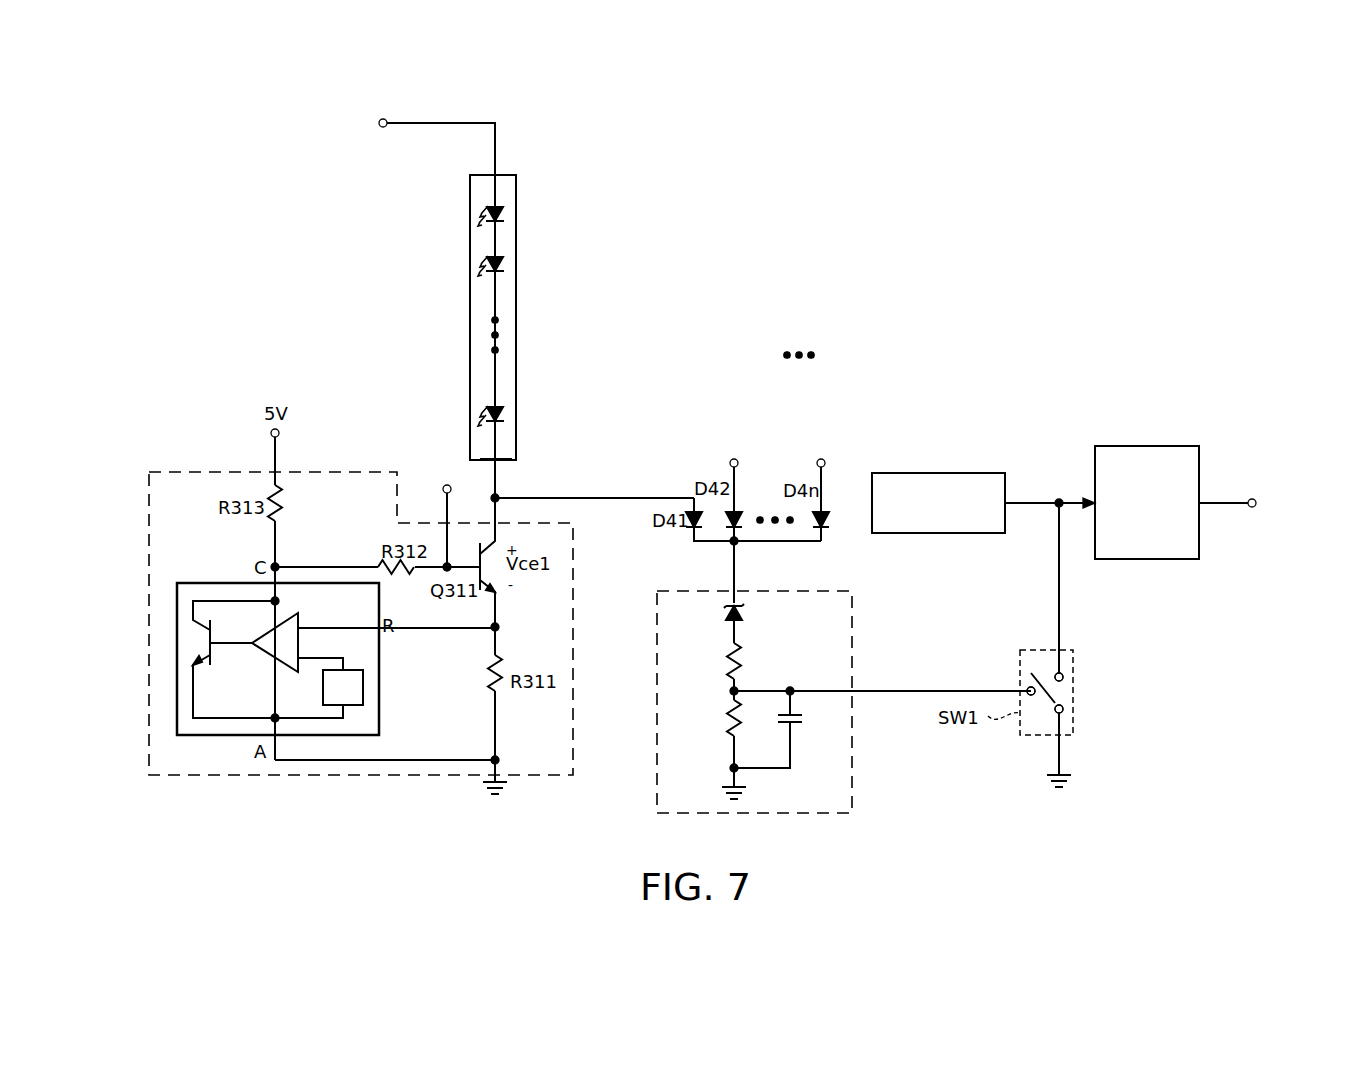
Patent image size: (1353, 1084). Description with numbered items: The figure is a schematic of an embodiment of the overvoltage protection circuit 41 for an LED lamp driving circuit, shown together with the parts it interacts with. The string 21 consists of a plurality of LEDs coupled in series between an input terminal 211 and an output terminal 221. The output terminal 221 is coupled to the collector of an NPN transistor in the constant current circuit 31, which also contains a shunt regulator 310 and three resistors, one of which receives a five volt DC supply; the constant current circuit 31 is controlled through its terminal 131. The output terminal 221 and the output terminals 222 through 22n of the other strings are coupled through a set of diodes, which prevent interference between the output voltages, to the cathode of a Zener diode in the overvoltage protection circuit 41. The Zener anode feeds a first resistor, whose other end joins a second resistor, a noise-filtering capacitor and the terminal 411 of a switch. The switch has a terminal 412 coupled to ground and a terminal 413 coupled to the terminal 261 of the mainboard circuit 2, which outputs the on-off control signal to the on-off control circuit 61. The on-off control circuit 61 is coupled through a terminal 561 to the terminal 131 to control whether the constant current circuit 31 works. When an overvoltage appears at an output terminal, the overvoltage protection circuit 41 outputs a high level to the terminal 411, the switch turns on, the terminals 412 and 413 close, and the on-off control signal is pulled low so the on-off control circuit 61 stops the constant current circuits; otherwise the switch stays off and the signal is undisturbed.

The mainboard circuit 2 is at (946, 473).
The string 21 is at (516, 298).
The input terminal 211 is at (497, 176).
The output terminal 221 is at (497, 462).
The output terminal 222 is at (734, 458).
The output terminal 22n is at (821, 458).
The constant current circuit 31 is at (149, 665).
The shunt regulator 310 is at (246, 583).
The terminal 131 is at (447, 488).
The overvoltage protection circuit 41 is at (853, 793).
The terminal 411 is at (1027, 691).
The terminal 412 is at (1060, 735).
The terminal 413 is at (1060, 650).
The on-off control circuit 61 is at (1137, 446).
The terminal 261 is at (1008, 501).
The terminal 561 is at (1257, 501).